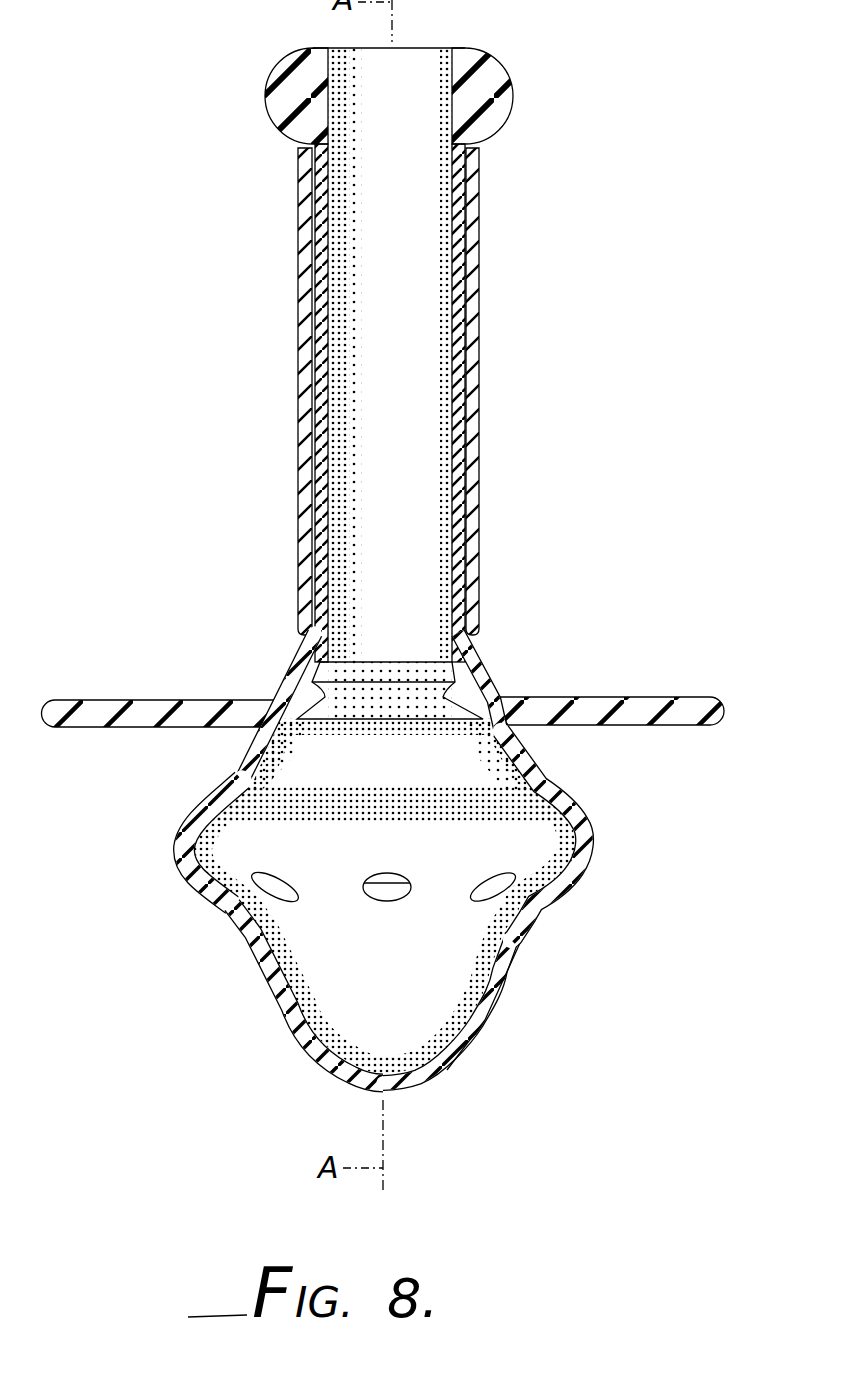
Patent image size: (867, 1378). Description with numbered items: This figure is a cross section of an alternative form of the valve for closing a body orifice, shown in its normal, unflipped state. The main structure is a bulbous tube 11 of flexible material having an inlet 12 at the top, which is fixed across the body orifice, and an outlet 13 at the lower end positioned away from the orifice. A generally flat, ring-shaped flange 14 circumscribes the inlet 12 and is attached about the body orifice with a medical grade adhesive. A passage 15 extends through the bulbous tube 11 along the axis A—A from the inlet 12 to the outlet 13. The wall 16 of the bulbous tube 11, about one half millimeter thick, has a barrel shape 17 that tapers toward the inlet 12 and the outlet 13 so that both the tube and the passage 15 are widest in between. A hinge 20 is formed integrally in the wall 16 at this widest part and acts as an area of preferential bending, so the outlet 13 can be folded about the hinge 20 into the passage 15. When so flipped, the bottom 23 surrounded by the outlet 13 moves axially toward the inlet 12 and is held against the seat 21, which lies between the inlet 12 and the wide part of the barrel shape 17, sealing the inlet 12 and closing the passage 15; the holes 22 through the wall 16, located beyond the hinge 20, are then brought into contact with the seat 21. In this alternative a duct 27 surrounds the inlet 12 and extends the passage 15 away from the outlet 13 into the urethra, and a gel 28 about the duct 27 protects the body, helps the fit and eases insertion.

The bulbous tube 11 is at (257, 957).
The inlet 12 is at (438, 47).
The outlet 13 is at (563, 893).
The flange 14 is at (645, 697).
The passage 15 is at (428, 737).
The wall 16 is at (236, 775).
The barrel shape 17 is at (617, 798).
The hinge 20 is at (176, 868).
The seat 21 is at (337, 721).
The holes 22 is at (383, 873).
The bottom 23 is at (443, 1070).
The duct 27 is at (455, 303).
The gel 28 is at (298, 282).